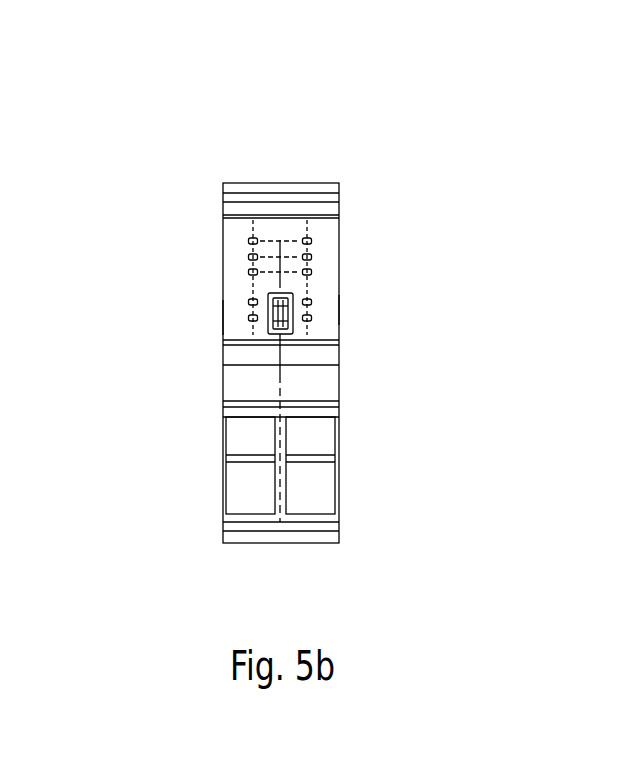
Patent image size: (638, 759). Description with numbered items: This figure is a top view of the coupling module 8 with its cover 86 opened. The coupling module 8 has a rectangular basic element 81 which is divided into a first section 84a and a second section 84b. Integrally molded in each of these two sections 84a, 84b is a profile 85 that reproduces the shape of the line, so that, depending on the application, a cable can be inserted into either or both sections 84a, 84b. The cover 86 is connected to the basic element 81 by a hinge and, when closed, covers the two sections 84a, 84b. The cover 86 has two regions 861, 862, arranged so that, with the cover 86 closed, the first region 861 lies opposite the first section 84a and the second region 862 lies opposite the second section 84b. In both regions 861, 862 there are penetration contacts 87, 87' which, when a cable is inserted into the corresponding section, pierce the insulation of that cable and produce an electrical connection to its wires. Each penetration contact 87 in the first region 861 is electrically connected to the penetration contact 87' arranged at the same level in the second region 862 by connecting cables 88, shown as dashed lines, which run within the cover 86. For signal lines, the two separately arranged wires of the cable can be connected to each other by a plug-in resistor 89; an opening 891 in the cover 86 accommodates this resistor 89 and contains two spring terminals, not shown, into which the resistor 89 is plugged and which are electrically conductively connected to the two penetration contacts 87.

The coupling module 8 is at (138, 87).
The basic element 81 is at (313, 389).
The first section 84a is at (262, 503).
The second section 84b is at (300, 502).
The profile 85 is at (237, 413).
The cover 86 is at (263, 190).
The first region of the cover 861 is at (233, 319).
The second region of the cover 862 is at (333, 310).
The penetration contacts 87 is at (163, 248).
The penetration contacts 87' is at (403, 203).
The connecting cables 88 is at (298, 306).
The resistor 89 is at (312, 322).
The opening 891 is at (276, 331).